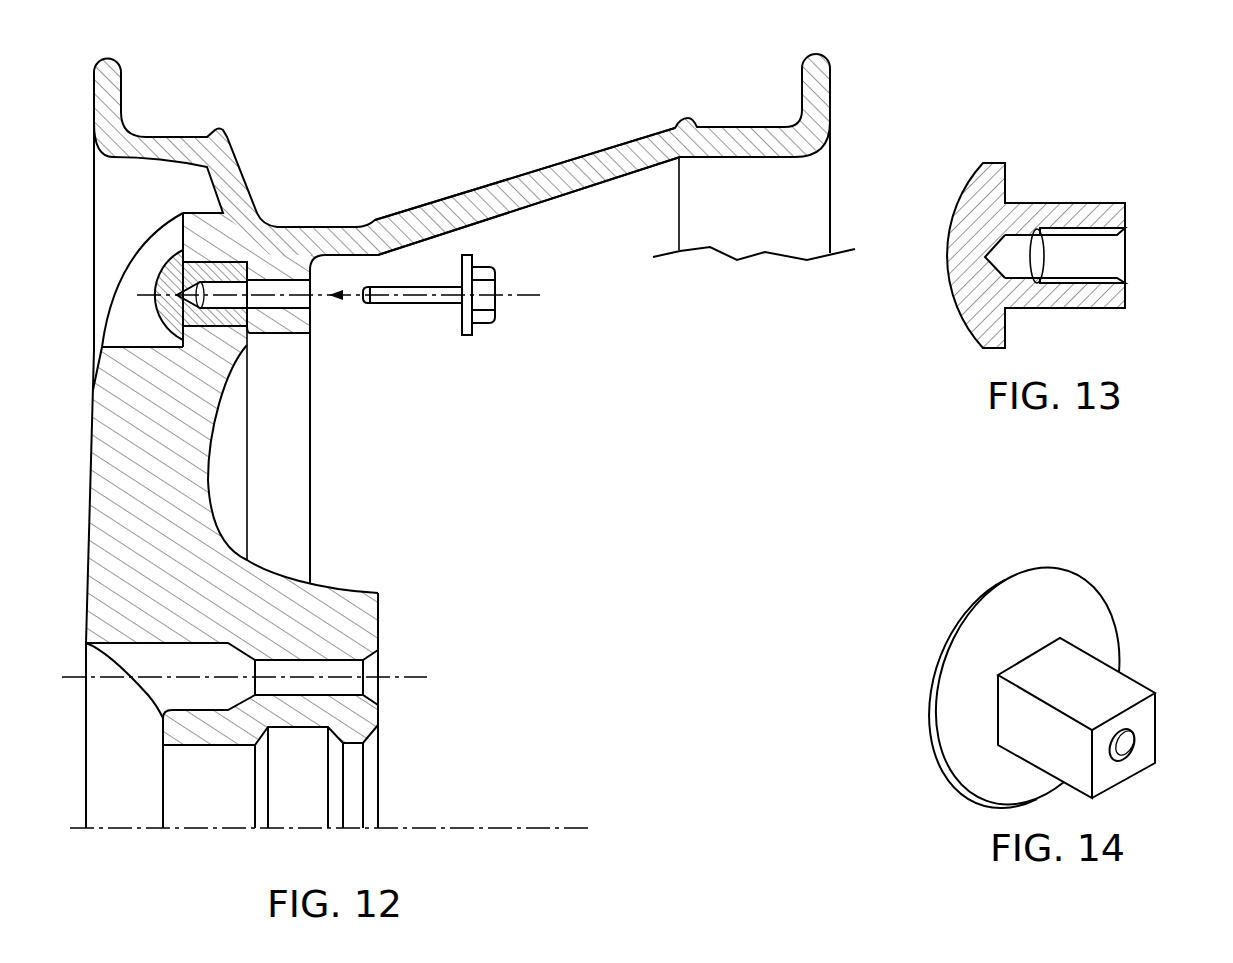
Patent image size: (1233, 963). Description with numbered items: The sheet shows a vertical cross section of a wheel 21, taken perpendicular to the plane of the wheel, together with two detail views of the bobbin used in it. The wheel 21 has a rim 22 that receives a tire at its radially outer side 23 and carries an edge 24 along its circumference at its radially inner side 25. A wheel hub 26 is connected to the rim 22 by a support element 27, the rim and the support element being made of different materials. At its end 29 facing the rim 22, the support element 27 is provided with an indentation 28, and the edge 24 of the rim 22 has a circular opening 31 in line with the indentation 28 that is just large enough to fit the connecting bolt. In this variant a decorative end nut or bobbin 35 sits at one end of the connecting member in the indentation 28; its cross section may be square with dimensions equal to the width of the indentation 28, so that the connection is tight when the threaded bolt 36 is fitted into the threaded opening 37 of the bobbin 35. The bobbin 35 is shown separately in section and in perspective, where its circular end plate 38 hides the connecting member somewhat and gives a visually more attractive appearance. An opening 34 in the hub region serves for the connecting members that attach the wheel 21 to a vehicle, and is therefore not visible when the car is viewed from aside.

In FIG. 12, the wheel 21 is at (830, 195).
In FIG. 12, the rim 22 is at (593, 155).
In FIG. 12, the radially outer side 23 is at (495, 152).
In FIG. 12, the edge 24 is at (280, 334).
In FIG. 12, the radially inner side 25 is at (588, 247).
In FIG. 12, the wheel hub 26 is at (372, 793).
In FIG. 12, the support element 27 is at (197, 497).
In FIG. 12, the indentation 28 is at (188, 240).
In FIG. 12, the end 29 is at (198, 220).
In FIG. 12, the opening 31 is at (279, 283).
In FIG. 12, the opening 34 is at (360, 670).
In FIG. 12, the bobbin 35 is at (135, 280).
In FIG. 13, the bobbin 35 is at (1127, 215).
In FIG. 14, the bobbin 35 is at (1158, 692).
In FIG. 12, the threaded bolt 36 is at (420, 303).
In FIG. 12, the threaded opening 37 is at (226, 282).
In FIG. 13, the threaded opening 37 is at (1103, 262).
In FIG. 14, the threaded opening 37 is at (1128, 752).
In FIG. 14, the circular end plate 38 is at (925, 738).